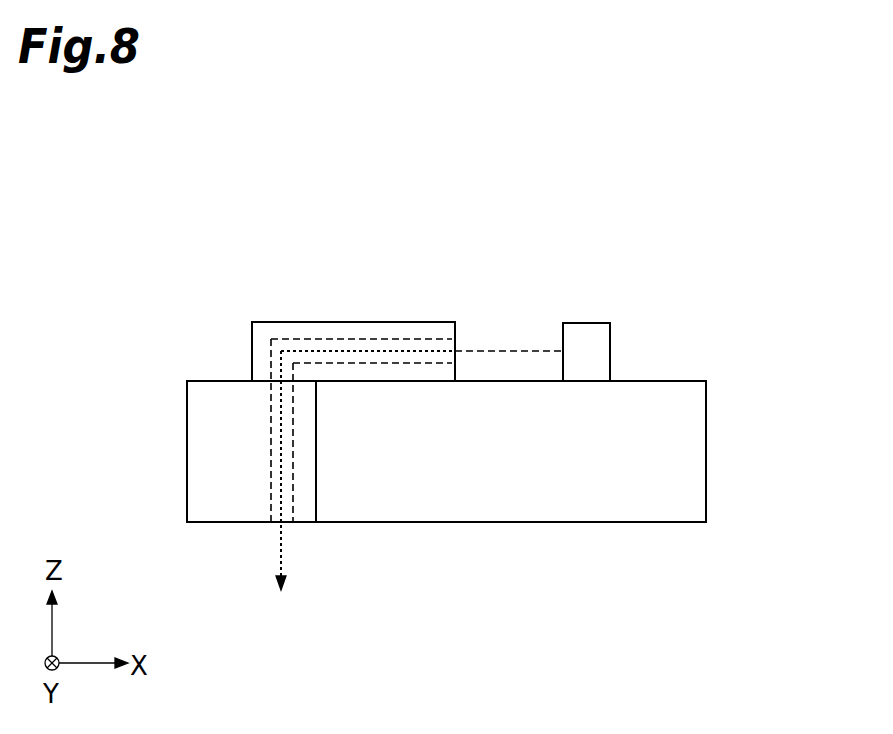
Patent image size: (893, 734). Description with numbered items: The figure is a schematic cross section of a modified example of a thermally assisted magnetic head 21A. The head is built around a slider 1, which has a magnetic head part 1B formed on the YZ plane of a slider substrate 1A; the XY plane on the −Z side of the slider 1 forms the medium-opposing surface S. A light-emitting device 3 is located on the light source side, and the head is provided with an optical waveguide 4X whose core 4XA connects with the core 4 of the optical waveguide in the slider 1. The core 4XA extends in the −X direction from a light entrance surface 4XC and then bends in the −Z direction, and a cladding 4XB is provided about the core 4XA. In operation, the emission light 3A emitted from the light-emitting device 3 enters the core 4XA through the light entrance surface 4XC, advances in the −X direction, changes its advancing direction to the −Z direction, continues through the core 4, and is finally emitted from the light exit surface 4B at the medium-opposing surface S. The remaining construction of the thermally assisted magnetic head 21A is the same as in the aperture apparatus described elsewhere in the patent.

The thermally assisted magnetic head 21A is at (679, 188).
The slider 1 is at (446, 522).
The slider substrate 1A is at (417, 483).
The magnetic head part 1B is at (302, 510).
The medium-opposing surface S is at (628, 524).
The light-emitting device 3 is at (592, 333).
The emission light 3A is at (517, 348).
The core 4 is at (270, 443).
The optical waveguide 4X is at (395, 263).
The core 4XA is at (372, 338).
The cladding 4XB is at (330, 370).
The light entrance surface 4XC is at (456, 347).
The light exit surface 4B is at (273, 527).